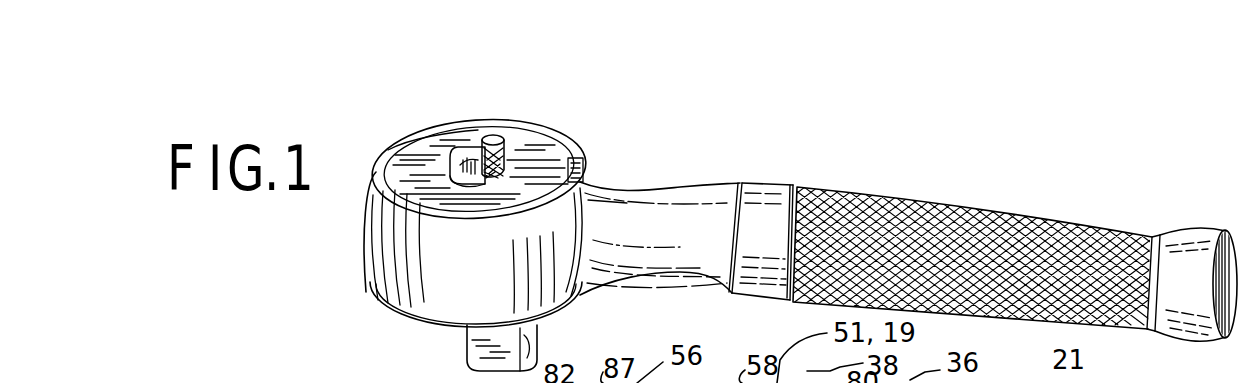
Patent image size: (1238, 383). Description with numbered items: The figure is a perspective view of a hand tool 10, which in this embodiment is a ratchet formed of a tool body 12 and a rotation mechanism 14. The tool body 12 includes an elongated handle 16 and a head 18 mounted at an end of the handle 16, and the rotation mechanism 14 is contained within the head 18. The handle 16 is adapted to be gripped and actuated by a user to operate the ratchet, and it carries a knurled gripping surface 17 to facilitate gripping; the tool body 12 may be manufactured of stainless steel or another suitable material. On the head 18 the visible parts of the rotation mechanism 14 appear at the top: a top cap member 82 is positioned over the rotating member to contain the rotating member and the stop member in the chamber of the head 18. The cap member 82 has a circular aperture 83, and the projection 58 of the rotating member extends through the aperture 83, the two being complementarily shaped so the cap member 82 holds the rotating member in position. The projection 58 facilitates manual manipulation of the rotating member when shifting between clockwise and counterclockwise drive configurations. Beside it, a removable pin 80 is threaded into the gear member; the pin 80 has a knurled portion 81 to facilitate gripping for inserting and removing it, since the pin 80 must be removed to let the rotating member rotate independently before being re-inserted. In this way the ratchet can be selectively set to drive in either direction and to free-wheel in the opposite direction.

The hand tool 10 is at (802, 133).
The tool body 12 is at (907, 180).
The rotation mechanism 14 is at (496, 123).
The handle 16 is at (1000, 227).
The knurled gripping surface 17 is at (1087, 238).
The head 18 is at (557, 285).
The projection 58 is at (467, 149).
The removable pin 80 is at (503, 141).
The knurled portion 81 is at (507, 160).
The top cap member 82 is at (422, 153).
The circular aperture 83 is at (462, 182).